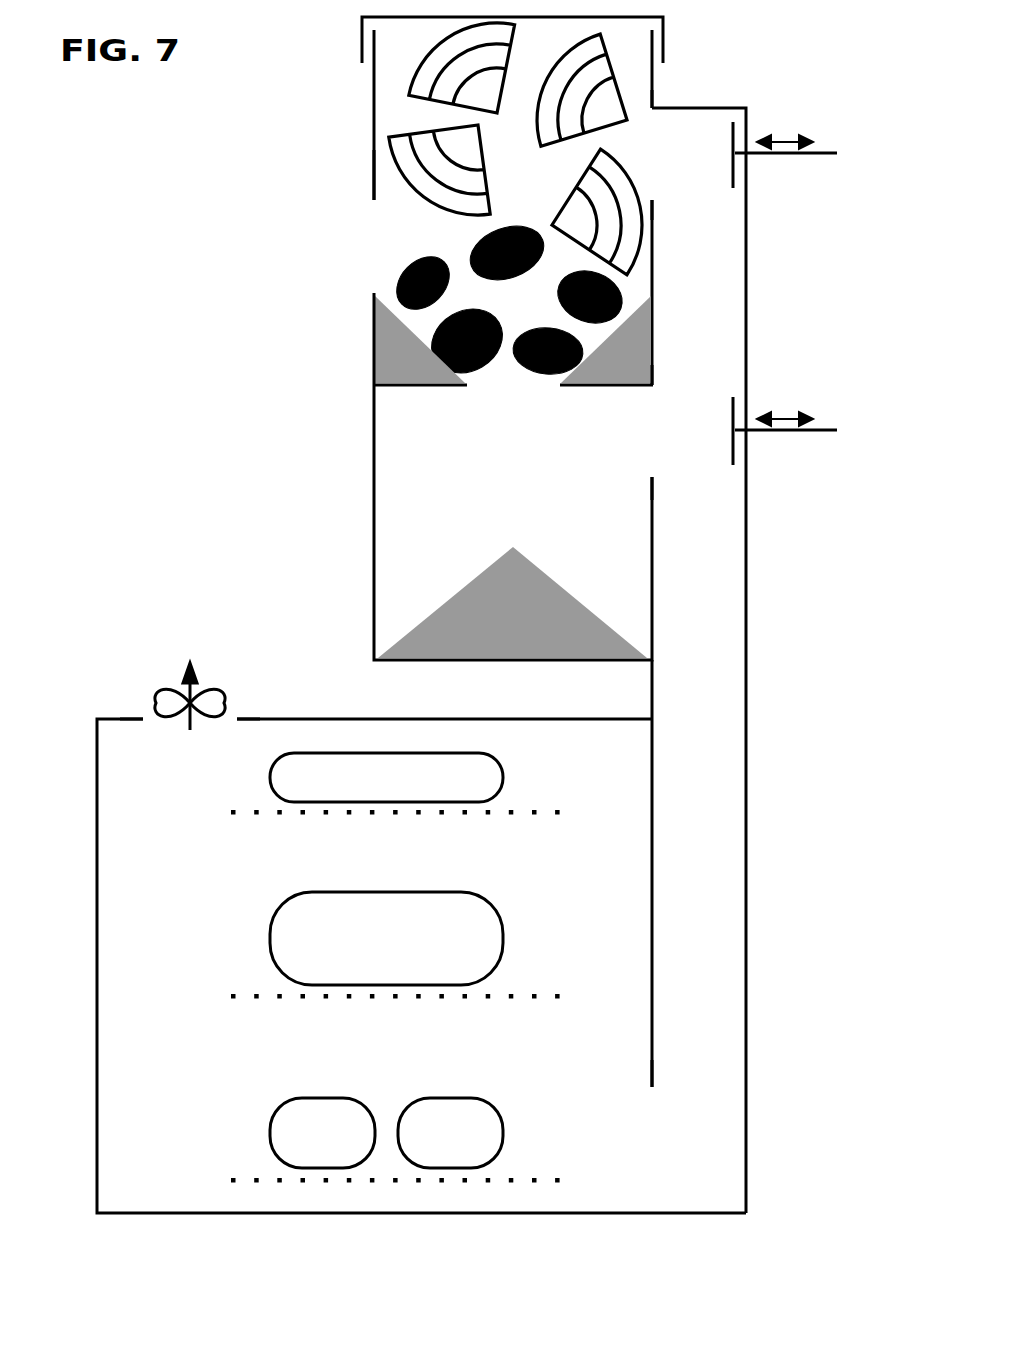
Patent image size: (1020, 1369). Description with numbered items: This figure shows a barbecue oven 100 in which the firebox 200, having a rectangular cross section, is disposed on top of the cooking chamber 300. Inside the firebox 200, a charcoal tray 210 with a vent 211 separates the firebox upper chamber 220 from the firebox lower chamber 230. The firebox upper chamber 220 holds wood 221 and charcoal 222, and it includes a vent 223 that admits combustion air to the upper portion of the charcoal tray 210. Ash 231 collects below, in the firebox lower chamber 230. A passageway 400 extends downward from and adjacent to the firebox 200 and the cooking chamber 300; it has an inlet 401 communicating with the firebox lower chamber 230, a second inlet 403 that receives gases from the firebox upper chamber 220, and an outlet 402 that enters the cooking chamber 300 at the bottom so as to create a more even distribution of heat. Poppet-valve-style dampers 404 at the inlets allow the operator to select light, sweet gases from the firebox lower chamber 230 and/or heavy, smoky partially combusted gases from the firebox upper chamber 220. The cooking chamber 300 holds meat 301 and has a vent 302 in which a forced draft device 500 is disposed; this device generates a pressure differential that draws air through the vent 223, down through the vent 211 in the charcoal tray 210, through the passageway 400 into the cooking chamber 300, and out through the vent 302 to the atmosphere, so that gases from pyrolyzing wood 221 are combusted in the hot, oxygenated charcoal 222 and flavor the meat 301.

The barbecue oven 100 is at (443, 615).
The firebox 200 is at (435, 338).
The charcoal tray 210 is at (420, 404).
The vent 211 is at (574, 404).
The firebox upper chamber 220 is at (485, 201).
The wood 221 is at (515, 149).
The charcoal 222 is at (507, 301).
The vent 223 is at (400, 193).
The firebox lower chamber 230 is at (481, 476).
The ash 231 is at (513, 477).
The cooking chamber 300 is at (390, 966).
The meat 301 is at (386, 960).
The vent 302 is at (190, 749).
The passageway 400 is at (750, 651).
The inlet 401 is at (670, 432).
The outlet 402 is at (684, 1098).
The second inlet 403 is at (670, 155).
The dampers 404 is at (785, 295).
The forced draft device 500 is at (190, 677).